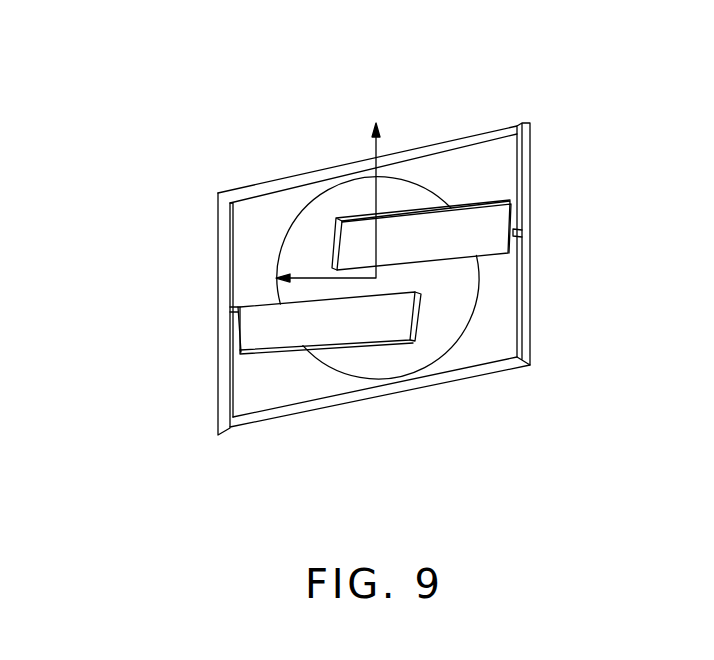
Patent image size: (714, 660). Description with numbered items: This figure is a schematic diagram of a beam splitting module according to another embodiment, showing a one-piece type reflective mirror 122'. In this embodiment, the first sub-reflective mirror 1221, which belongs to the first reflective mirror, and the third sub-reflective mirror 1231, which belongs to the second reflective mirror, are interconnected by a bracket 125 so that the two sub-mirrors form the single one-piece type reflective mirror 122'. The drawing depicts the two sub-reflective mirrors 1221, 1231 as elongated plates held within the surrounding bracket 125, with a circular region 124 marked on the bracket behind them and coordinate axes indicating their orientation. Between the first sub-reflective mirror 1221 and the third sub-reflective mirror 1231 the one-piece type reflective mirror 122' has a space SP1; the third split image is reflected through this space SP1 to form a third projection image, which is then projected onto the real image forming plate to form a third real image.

The one-piece type reflective mirror 122' is at (322, 259).
The light-passing region 124 is at (337, 200).
The first sub-reflective mirror 1221 is at (272, 330).
The third sub-reflective mirror 1231 is at (467, 225).
The bracket 125 is at (525, 312).
The space SP1 is at (475, 262).